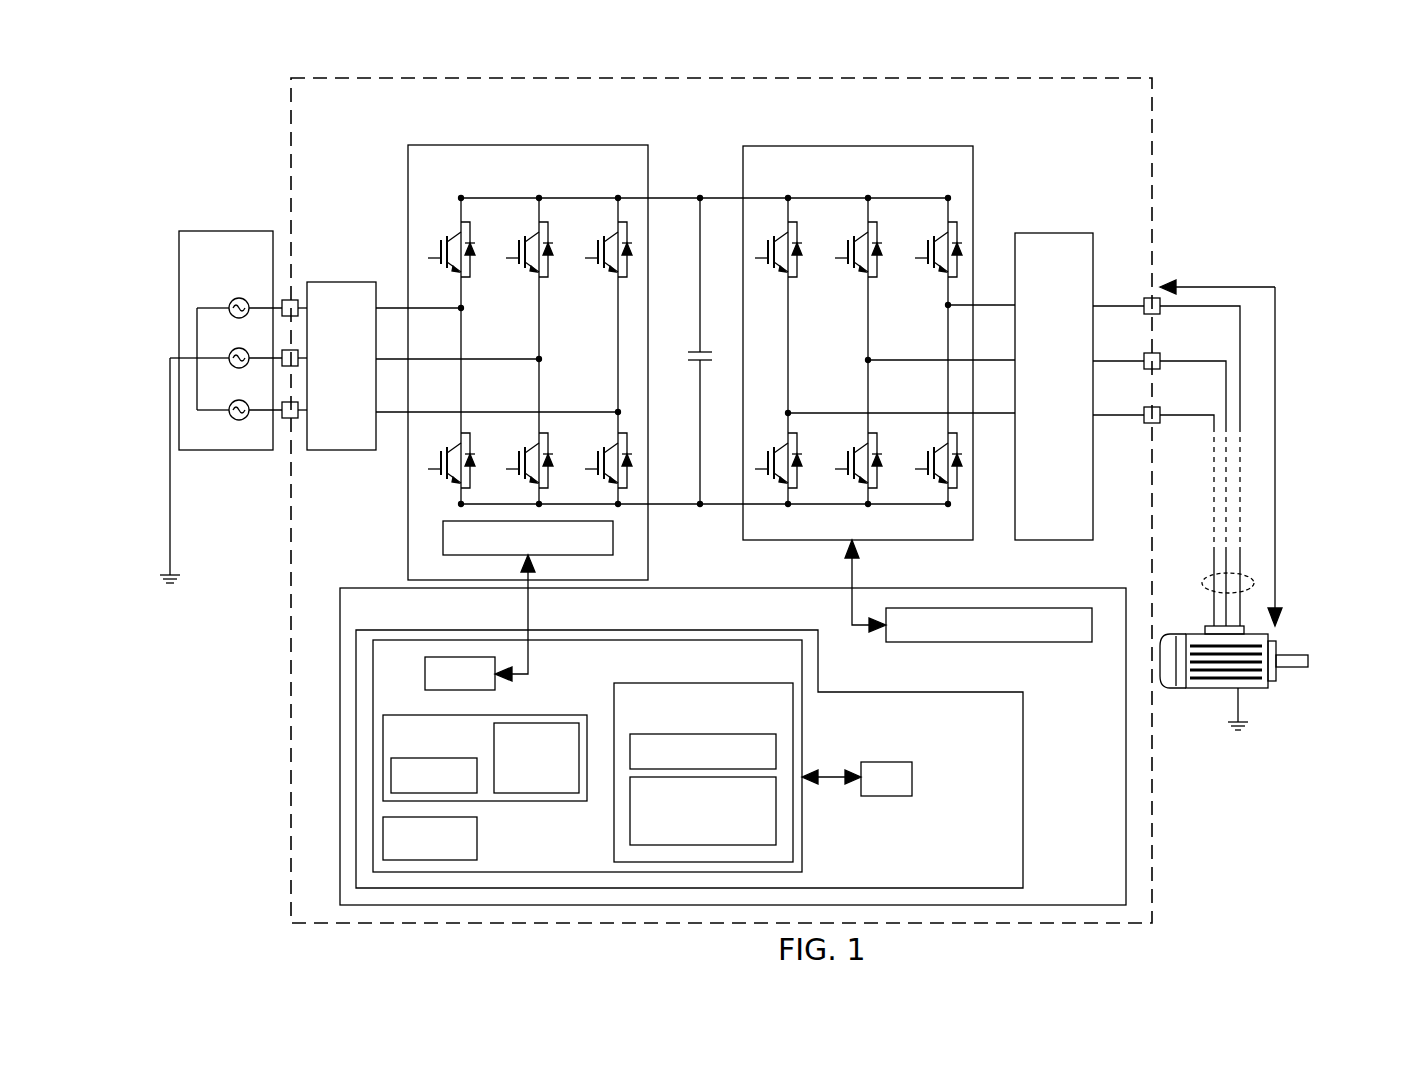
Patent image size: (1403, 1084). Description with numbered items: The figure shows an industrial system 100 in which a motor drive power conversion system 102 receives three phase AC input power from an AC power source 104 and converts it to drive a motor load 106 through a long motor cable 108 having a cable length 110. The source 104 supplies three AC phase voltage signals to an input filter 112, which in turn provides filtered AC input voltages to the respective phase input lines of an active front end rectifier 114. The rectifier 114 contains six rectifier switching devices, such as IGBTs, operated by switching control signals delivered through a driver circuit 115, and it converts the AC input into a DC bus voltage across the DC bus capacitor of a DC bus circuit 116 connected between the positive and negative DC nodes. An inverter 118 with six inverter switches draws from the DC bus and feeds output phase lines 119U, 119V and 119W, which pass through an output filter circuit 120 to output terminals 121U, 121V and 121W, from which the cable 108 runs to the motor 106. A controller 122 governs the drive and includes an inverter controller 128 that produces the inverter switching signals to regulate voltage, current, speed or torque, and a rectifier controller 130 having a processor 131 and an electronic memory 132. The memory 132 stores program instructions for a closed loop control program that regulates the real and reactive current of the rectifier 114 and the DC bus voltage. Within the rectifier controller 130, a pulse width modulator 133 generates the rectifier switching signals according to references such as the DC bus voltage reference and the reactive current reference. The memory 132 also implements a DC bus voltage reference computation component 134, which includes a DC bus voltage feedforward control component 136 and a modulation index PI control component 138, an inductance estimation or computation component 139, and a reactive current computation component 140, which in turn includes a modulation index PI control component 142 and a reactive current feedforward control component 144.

The industrial system 100 is at (234, 72).
The motor drive power conversion system 102 is at (770, 78).
The AC power source 104 is at (220, 231).
The motor load 106 is at (1262, 690).
The long motor cable 108 is at (1255, 580).
The cable length 110 is at (1275, 287).
The input filter 112 is at (358, 282).
The active front end rectifier 114 is at (530, 145).
The driver circuit 115 is at (443, 538).
The DC bus circuit 116 is at (732, 148).
The inverter 118 is at (852, 146).
The output phase line 119U is at (956, 309).
The output phase line 119V is at (941, 361).
The output phase line 119W is at (941, 414).
The output filter circuit 120 is at (1055, 233).
The output terminal 121U is at (1163, 307).
The output terminal 121V is at (1163, 360).
The output terminal 121W is at (1163, 414).
The controller 122 is at (395, 588).
The inverter controller 128 is at (1040, 608).
The rectifier controller 130 is at (1023, 866).
The processor 131 is at (895, 762).
The electronic memory 132 is at (751, 640).
The modulator 133 is at (425, 675).
The DC bus voltage reference computation component 134 is at (697, 683).
The DC bus voltage feedforward control component 136 is at (776, 752).
The modulation index PI control component 138 is at (776, 813).
The inductance estimation or computation component 139 is at (383, 838).
The reactive current computation component 140 is at (383, 738).
The modulation index PI control component 142 is at (537, 723).
The reactive current feedforward control component 144 is at (391, 775).